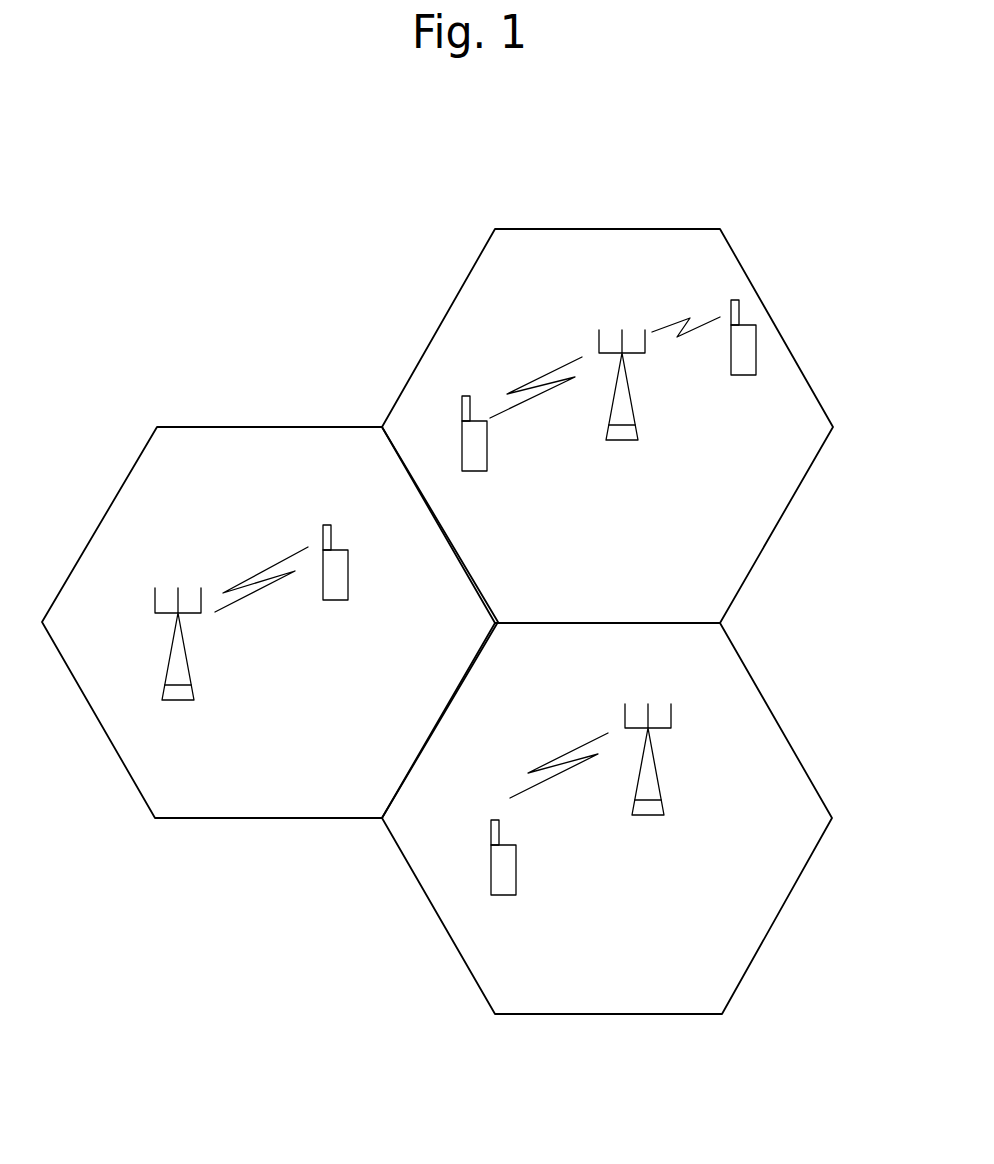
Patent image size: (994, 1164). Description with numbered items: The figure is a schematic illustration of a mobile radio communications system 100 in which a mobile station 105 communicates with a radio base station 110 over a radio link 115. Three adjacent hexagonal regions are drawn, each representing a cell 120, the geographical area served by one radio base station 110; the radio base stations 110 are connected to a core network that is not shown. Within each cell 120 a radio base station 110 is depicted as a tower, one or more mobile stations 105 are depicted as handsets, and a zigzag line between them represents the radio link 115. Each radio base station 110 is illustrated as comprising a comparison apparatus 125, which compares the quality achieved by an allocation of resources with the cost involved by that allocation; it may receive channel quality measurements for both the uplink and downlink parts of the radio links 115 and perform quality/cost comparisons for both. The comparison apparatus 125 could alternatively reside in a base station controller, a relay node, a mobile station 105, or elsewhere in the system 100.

The mobile radio communications system 100 is at (452, 660).
The mobile station 105 is at (466, 471).
The radio base station 110 is at (629, 392).
The radio link 115 is at (530, 382).
The cell 120 is at (240, 818).
The comparison apparatus 125 is at (622, 442).